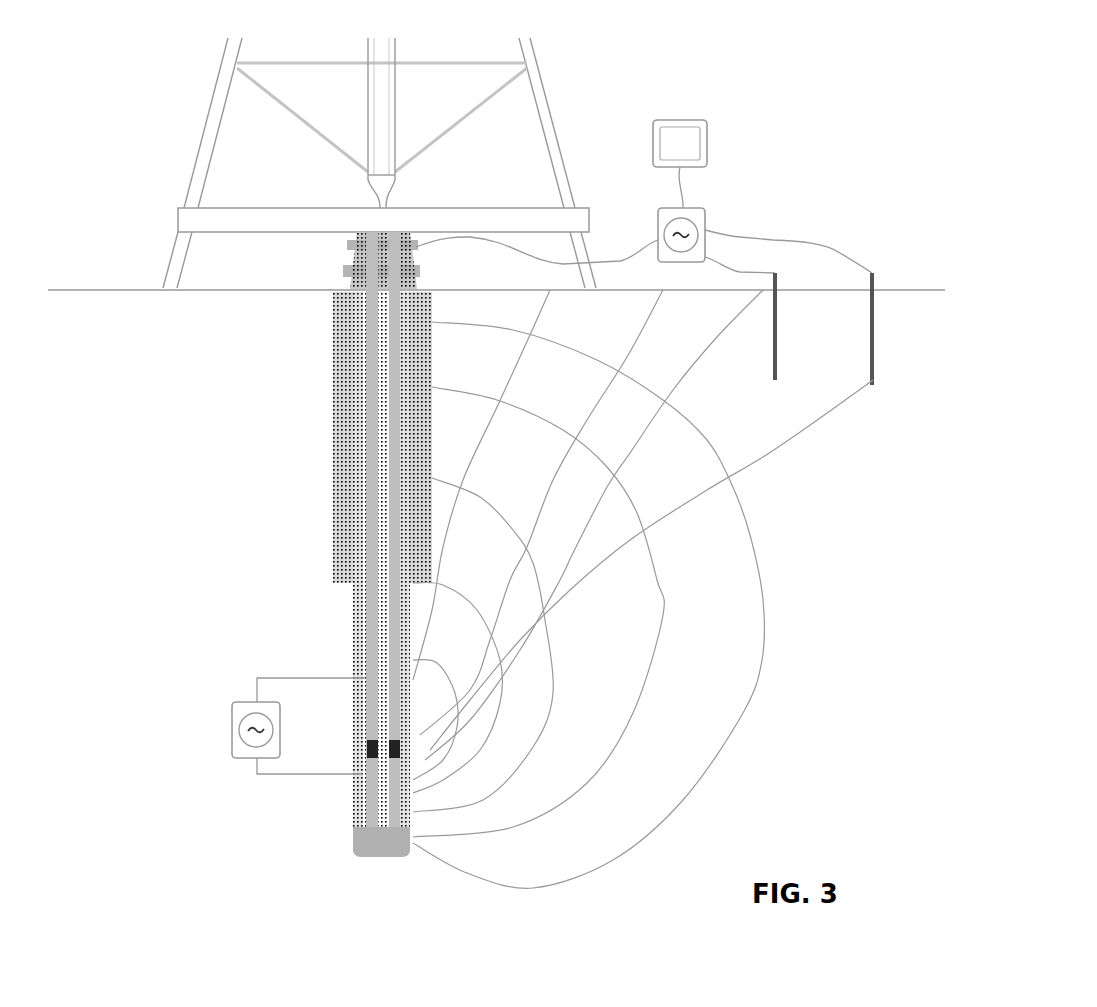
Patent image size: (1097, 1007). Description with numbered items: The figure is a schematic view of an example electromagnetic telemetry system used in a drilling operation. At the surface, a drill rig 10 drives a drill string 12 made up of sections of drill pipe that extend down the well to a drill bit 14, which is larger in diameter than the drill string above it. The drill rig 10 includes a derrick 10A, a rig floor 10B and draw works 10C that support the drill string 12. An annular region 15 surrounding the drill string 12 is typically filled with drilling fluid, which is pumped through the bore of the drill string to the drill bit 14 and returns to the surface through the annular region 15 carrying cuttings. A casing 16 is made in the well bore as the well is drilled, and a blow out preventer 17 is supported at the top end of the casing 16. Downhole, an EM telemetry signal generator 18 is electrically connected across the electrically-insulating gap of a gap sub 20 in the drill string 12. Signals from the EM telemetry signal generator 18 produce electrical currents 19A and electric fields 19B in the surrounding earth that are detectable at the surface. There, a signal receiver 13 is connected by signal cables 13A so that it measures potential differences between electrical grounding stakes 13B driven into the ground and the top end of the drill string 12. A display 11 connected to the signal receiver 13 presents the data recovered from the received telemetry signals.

The drill rig 10 is at (113, 103).
The derrick 10A is at (545, 104).
The rig floor 10B is at (246, 205).
The draw works 10C is at (380, 183).
The display 11 is at (697, 118).
The drill string 12 is at (372, 633).
The signal receiver 13 is at (697, 207).
The signal cables 13A is at (618, 261).
The electrical grounding stakes 13B is at (793, 270).
The drill bit 14 is at (367, 845).
The annular region 15 is at (360, 563).
The casing 16 is at (352, 455).
The blow out preventer 17 is at (348, 245).
The EM telemetry signal generator 18 is at (232, 730).
The electrical currents 19A is at (710, 777).
The electric fields 19B is at (668, 475).
The gap sub 20 is at (370, 755).